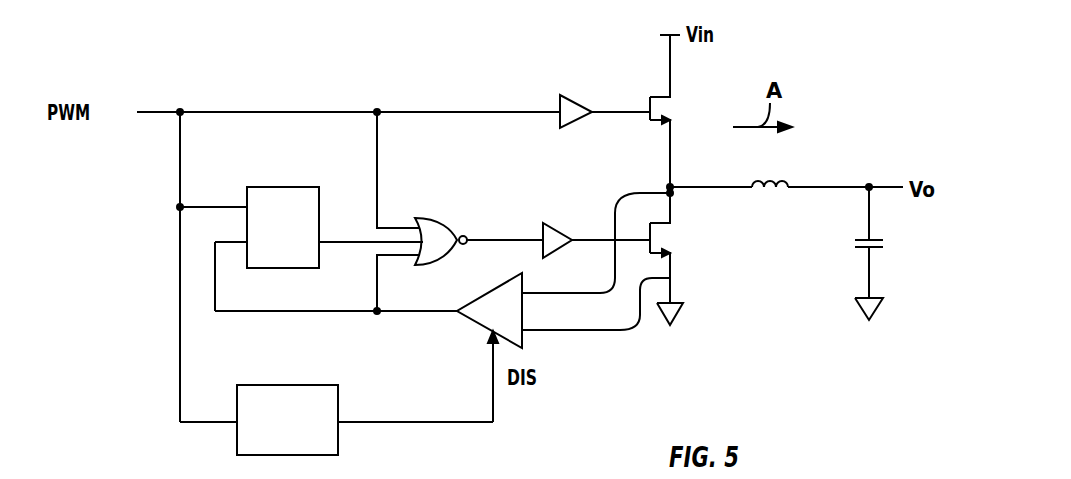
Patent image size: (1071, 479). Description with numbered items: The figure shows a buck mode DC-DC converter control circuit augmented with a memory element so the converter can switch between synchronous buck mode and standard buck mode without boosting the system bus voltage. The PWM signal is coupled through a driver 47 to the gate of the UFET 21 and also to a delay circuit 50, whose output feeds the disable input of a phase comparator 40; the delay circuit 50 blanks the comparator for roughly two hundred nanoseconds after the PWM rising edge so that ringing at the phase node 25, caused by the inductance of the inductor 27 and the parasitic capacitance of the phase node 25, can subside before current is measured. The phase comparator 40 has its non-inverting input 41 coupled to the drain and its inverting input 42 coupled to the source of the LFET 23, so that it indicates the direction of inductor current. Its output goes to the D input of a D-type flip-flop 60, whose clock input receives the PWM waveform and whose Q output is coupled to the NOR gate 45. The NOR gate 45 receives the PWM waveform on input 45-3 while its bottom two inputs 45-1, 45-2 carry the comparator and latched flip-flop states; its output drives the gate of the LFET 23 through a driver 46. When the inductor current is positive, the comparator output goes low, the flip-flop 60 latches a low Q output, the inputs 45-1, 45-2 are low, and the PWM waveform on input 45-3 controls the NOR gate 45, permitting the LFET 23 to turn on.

The UFET 21 is at (660, 108).
The LFET 23 is at (660, 242).
The phase node 25 is at (715, 188).
The inductor 27 is at (772, 191).
The phase comparator 40 is at (483, 296).
The non-inverting (+) input 41 is at (525, 291).
The inverting (−) input 42 is at (525, 328).
The NOR gate 45 is at (453, 219).
The first input of NOR gate 45-1 is at (408, 256).
The second input of NOR gate 45-2 is at (357, 244).
The third input of NOR gate 45-3 is at (398, 228).
The driver 46 is at (563, 224).
The driver 47 is at (573, 96).
The delay circuit 50 is at (308, 385).
The D-type flip-flop 60 is at (294, 186).